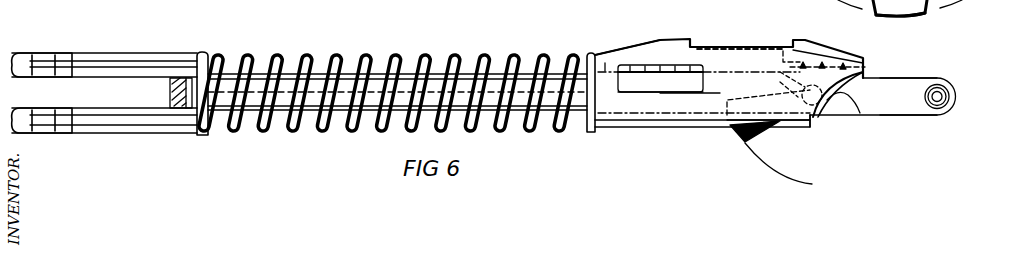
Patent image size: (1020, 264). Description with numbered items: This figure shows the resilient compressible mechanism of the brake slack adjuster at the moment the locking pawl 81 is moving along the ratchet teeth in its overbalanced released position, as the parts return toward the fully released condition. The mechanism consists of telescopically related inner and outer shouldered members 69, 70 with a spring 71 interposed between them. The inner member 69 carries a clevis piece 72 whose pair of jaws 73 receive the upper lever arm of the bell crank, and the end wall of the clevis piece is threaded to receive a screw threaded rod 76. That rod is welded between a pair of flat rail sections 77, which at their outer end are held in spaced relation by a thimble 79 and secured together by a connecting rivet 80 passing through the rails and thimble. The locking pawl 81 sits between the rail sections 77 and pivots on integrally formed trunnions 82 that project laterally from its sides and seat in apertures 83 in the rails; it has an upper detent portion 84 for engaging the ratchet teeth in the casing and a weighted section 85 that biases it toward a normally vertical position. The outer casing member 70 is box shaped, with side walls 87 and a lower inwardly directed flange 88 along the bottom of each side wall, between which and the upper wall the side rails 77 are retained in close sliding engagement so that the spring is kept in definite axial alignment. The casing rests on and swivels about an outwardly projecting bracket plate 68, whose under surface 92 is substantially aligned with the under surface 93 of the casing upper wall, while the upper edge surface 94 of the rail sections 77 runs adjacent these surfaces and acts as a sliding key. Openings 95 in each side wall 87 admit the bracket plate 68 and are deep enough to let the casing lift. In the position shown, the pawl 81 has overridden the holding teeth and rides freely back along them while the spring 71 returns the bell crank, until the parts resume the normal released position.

In FIG. 6, the bracket plate 68 is at (634, 66).
In FIG. 6, the inner shouldered member 69 is at (203, 133).
In FIG. 6, the outer shouldered member 70 is at (592, 134).
In FIG. 6, the spring 71 is at (383, 127).
In FIG. 6, the clevis piece 72 is at (118, 126).
In FIG. 6, the jaws 73 is at (8, 62).
In FIG. 6, the screw threaded rod 76 is at (176, 88).
In FIG. 6, the flat rail sections 77 is at (908, 78).
In FIG. 6, the thimble 79 is at (920, 119).
In FIG. 6, the connecting rivet 80 is at (943, 108).
In FIG. 6, the locking pawl 81 is at (735, 131).
In FIG. 6, the trunnions 82 is at (820, 112).
In FIG. 6, the apertures 83 is at (863, 72).
In FIG. 6, the detent portion 84 is at (860, 123).
In FIG. 5, the weighted section 85 is at (889, 13).
In FIG. 6, the weighted section 85 is at (752, 136).
In FIG. 6, the side walls 87 is at (689, 102).
In FIG. 6, the lower inwardly directed flange 88 is at (664, 102).
In FIG. 6, the under surface of bracket plate 92 is at (644, 67).
In FIG. 6, the under surface of upper wall 93 is at (603, 47).
In FIG. 6, the upper edge surface of side rail sections 94 is at (694, 68).
In FIG. 6, the openings 95 is at (644, 93).